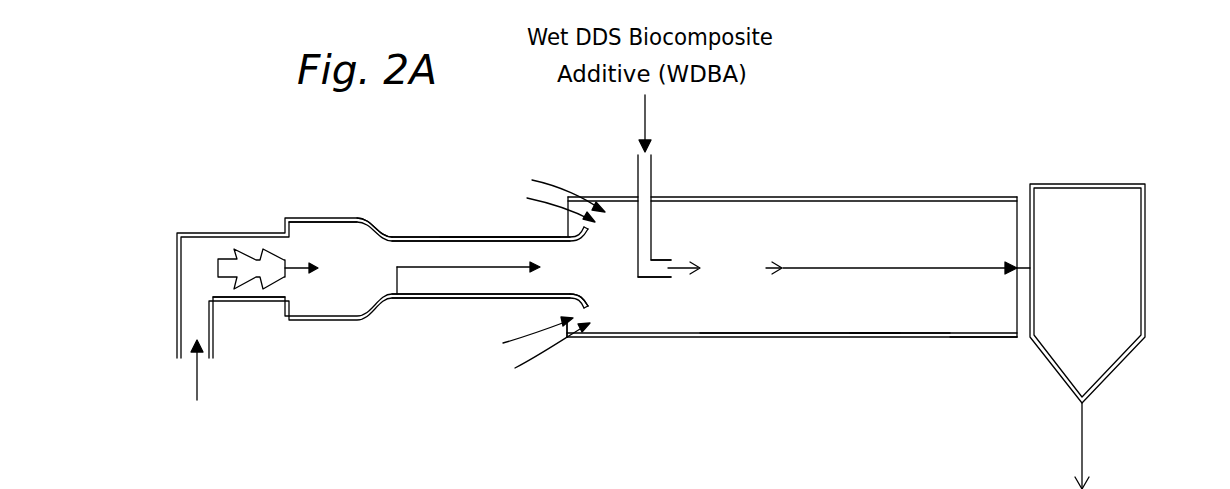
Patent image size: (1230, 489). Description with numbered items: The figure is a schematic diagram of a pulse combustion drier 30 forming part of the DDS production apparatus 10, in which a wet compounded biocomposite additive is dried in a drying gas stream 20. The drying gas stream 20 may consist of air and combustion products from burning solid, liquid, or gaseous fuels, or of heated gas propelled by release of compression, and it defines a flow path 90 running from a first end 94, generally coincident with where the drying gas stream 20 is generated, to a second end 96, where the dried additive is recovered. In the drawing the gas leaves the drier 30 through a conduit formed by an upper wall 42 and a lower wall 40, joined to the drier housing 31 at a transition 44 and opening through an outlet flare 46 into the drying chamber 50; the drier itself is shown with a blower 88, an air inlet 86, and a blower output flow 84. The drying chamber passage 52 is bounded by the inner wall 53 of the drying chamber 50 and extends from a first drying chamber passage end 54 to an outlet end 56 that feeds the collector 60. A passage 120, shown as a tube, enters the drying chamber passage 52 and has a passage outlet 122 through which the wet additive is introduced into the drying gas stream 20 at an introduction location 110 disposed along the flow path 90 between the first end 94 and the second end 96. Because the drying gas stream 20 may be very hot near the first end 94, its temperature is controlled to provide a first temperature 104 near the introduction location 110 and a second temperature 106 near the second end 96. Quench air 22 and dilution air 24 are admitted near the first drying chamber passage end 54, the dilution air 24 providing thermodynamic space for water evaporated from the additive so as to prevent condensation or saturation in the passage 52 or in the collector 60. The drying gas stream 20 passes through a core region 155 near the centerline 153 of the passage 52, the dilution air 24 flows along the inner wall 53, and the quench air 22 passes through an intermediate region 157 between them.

The DDS production apparatus 10 is at (1003, 130).
The drying gas stream 20 is at (440, 267).
The quench air 22 is at (335, 288).
The dilution air 24 is at (537, 183).
The pulse combustion drier 30 is at (152, 221).
The housing wall 31 is at (305, 322).
The lower conduit wall 40 is at (447, 298).
The upper conduit wall 42 is at (465, 250).
The conduit transition 44 is at (390, 236).
The conduit outlet flare 46 is at (582, 294).
The drying chamber 50 is at (830, 338).
The drying chamber passage 52 is at (783, 315).
The inner wall 53 is at (877, 333).
The first drying chamber passage end 54 is at (568, 337).
The chamber outlet end 56 is at (1013, 340).
The collector 60 is at (1105, 202).
The blower output flow 84 is at (303, 264).
The air inlet 86 is at (197, 383).
The blower / fan 88 is at (232, 265).
The flow path 90 is at (458, 268).
The first end 94 is at (403, 270).
The second end 96 is at (979, 231).
The first temperature 104 is at (665, 282).
The second temperature 106 is at (1019, 270).
The introduction location 110 is at (660, 282).
The passage 120 is at (645, 180).
The passage outlet 122 is at (683, 267).
The centerline 153 is at (902, 268).
The core region 155 is at (527, 488).
The intermediate region 157 is at (448, 479).